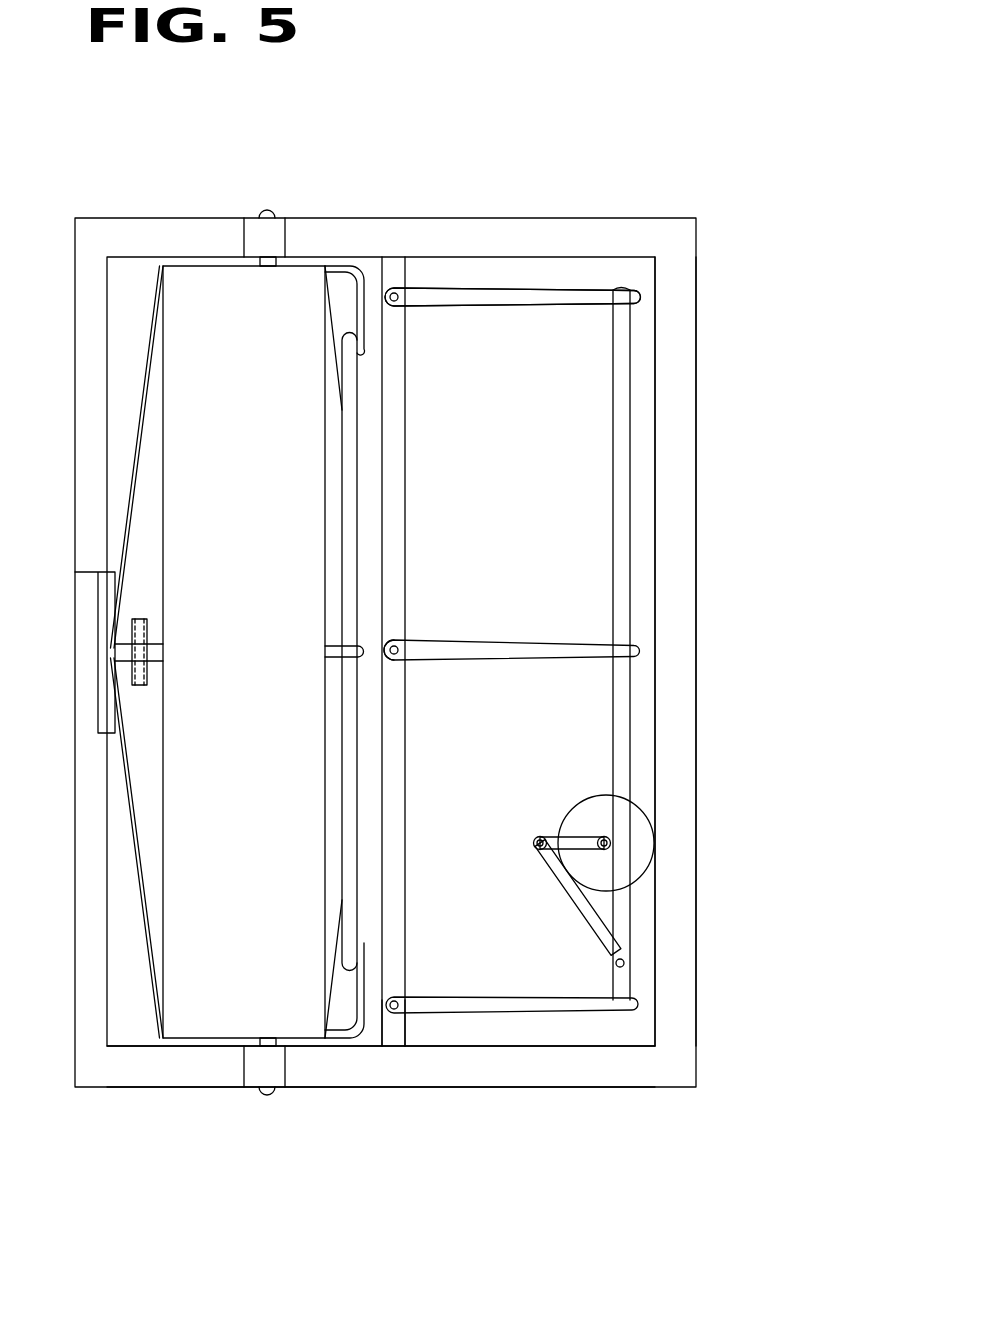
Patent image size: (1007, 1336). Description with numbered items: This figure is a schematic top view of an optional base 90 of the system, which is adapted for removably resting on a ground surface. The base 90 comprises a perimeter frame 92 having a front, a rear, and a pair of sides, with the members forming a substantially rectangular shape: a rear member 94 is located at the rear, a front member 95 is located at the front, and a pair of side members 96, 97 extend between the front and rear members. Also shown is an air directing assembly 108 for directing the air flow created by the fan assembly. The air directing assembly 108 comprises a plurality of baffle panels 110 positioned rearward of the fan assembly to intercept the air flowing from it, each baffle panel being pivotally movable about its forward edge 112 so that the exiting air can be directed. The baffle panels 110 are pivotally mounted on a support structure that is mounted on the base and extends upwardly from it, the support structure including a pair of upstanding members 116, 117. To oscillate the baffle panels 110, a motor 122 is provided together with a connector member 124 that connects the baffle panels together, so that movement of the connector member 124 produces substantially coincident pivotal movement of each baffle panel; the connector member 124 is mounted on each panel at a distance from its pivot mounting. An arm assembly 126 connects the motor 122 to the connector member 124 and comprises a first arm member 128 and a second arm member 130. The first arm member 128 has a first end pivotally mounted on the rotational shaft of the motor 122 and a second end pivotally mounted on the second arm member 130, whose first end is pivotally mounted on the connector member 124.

The base 90 is at (753, 332).
The perimeter frame 92 is at (512, 230).
The rear member 94 is at (670, 500).
The front member 95 is at (97, 440).
The side member 96 is at (407, 1072).
The side member 97 is at (345, 232).
The air directing assembly 108 is at (567, 282).
The baffle panels 110 is at (453, 303).
The forward edge 112 is at (388, 645).
The upstanding member 116 is at (392, 1047).
The upstanding member 117 is at (397, 260).
The motor 122 is at (637, 840).
The connector member 124 is at (620, 625).
The arm assembly 126 is at (523, 858).
The first arm member 128 is at (572, 847).
The second arm member 130 is at (547, 863).